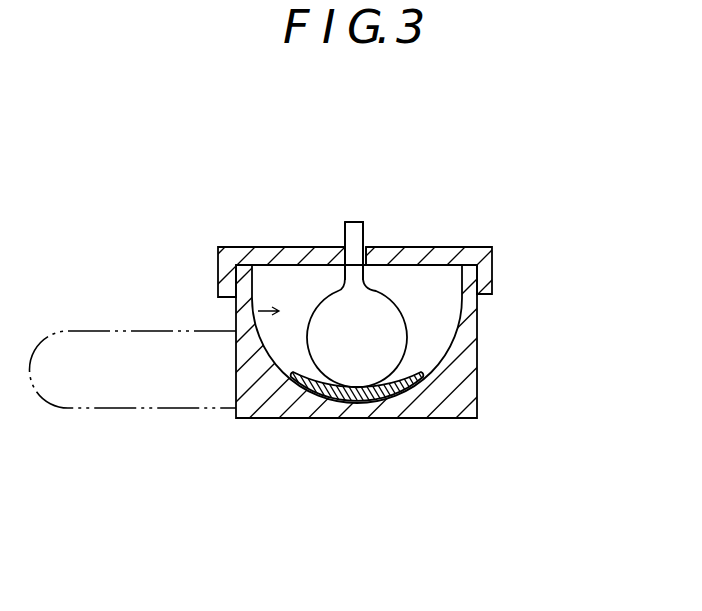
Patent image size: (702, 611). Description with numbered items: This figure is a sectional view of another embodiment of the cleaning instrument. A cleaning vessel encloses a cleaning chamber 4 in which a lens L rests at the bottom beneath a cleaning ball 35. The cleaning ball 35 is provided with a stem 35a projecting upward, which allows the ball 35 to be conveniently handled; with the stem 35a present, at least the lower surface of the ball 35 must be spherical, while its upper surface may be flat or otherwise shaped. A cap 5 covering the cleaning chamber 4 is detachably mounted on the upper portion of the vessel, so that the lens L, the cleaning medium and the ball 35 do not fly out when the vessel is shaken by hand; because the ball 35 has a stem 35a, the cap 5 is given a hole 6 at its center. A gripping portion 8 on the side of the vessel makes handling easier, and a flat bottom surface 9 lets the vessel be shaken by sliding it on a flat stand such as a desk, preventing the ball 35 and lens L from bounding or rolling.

The cleaning chamber 4 is at (237, 315).
The cap 5 is at (452, 247).
The hole 6 is at (378, 256).
The gripping portion 8 is at (145, 410).
The bottom surface 9 is at (418, 412).
The cleaning ball 35 is at (398, 348).
The stem 35a is at (350, 228).
The lens L is at (332, 400).